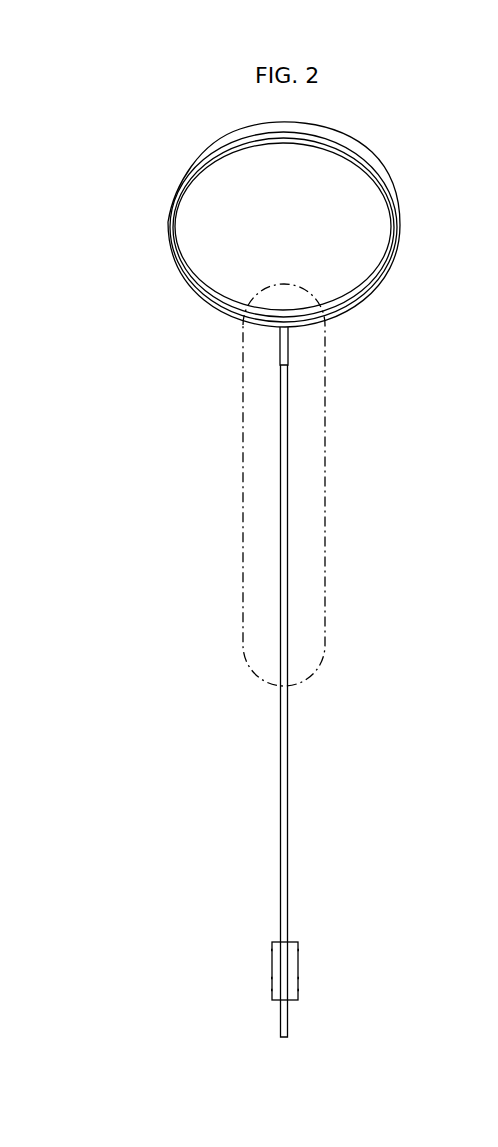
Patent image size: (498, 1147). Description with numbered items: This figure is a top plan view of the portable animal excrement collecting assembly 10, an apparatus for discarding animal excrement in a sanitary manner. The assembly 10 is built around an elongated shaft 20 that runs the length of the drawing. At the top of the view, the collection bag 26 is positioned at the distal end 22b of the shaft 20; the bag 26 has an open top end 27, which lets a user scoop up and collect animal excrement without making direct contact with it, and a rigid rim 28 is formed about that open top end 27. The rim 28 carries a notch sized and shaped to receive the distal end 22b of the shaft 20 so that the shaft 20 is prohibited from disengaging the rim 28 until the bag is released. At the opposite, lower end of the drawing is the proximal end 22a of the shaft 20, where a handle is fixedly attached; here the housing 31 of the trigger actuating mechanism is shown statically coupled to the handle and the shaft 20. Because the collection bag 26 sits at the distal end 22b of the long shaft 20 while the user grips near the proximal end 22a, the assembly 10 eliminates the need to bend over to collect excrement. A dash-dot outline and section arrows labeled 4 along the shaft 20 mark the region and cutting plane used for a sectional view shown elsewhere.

The portable animal excrement collecting assembly 10 is at (77, 235).
The collection bag 26 is at (348, 128).
The open top end 27 is at (347, 210).
The rigid rim 28 is at (372, 288).
The distal end 22b is at (287, 436).
The section line 4 is at (324, 487).
The elongated shaft 20 is at (293, 740).
The proximal end 22a is at (283, 887).
The housing 31 is at (295, 978).